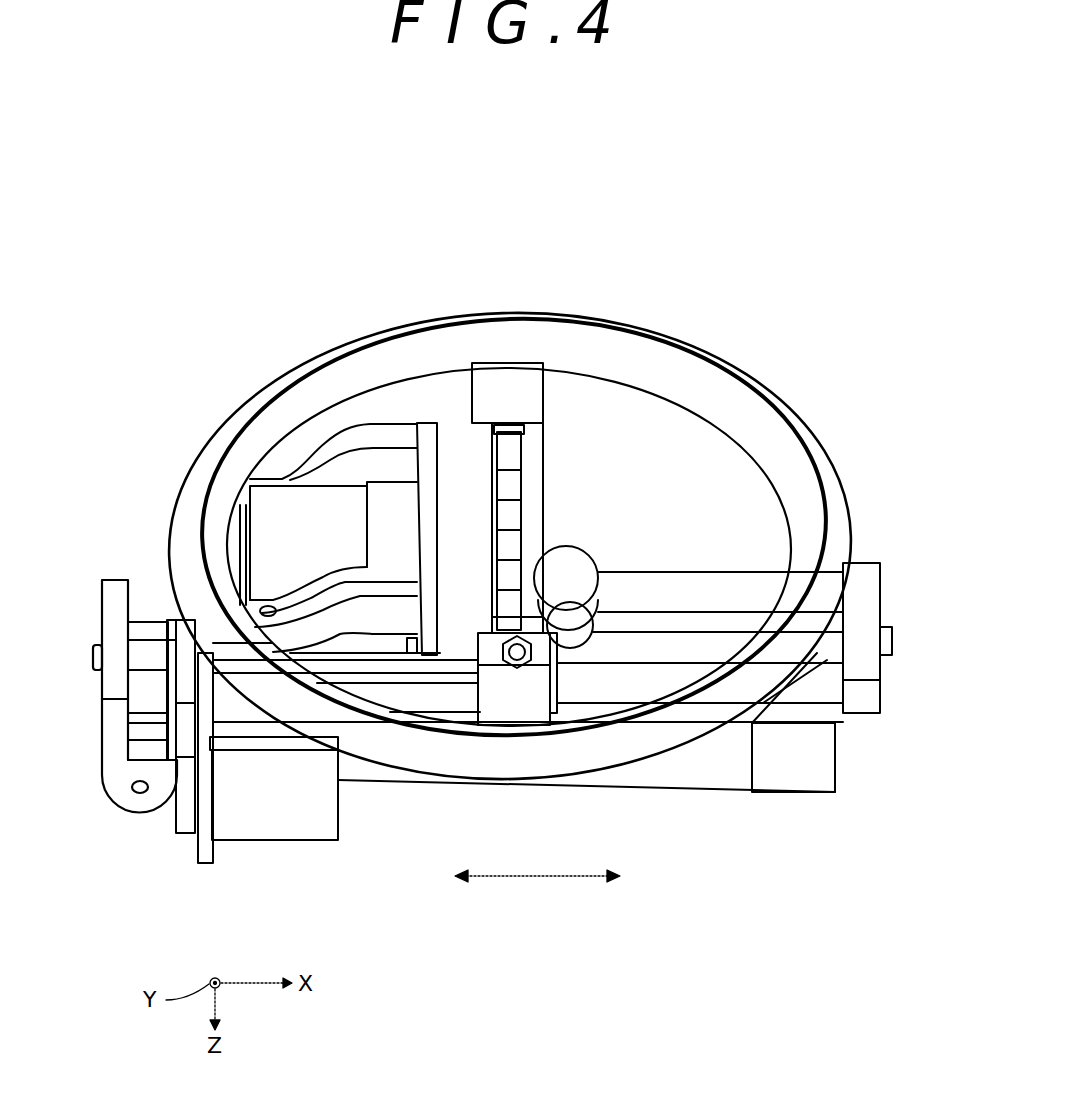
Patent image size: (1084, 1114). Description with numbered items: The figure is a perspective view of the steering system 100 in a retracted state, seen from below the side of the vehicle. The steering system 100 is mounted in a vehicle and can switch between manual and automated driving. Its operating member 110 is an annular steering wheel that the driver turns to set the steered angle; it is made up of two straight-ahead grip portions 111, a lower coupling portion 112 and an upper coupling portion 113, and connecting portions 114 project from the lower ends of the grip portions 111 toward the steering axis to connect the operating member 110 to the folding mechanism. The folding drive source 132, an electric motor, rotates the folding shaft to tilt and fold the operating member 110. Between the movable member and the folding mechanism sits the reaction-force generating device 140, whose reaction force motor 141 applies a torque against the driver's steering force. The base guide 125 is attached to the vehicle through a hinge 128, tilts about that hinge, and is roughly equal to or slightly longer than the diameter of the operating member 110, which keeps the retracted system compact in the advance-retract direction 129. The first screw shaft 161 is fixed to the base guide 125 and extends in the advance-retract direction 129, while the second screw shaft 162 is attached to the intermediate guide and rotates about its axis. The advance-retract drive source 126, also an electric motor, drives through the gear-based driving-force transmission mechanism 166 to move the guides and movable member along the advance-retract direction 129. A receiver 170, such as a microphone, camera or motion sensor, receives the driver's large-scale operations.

The steering system 100 is at (234, 236).
The operating member 110 is at (772, 372).
The straight-ahead grip portions 111 is at (662, 326).
The lower coupling portion 112 is at (175, 544).
The upper coupling portion 113 is at (855, 531).
The connecting portions 114 is at (508, 390).
The base guide 125 is at (873, 667).
The advance-retract drive source 126 is at (312, 822).
The hinge 128 is at (133, 815).
The advance-retract direction 129 is at (520, 880).
The folding drive source 132 is at (600, 573).
The reaction-force generating device 140 is at (285, 540).
The reaction force motor 141 is at (290, 560).
The first screw shaft 161 is at (838, 648).
The second screw shaft 162 is at (437, 702).
The driving-force transmission mechanism 166 is at (182, 834).
The receiver 170 is at (292, 498).